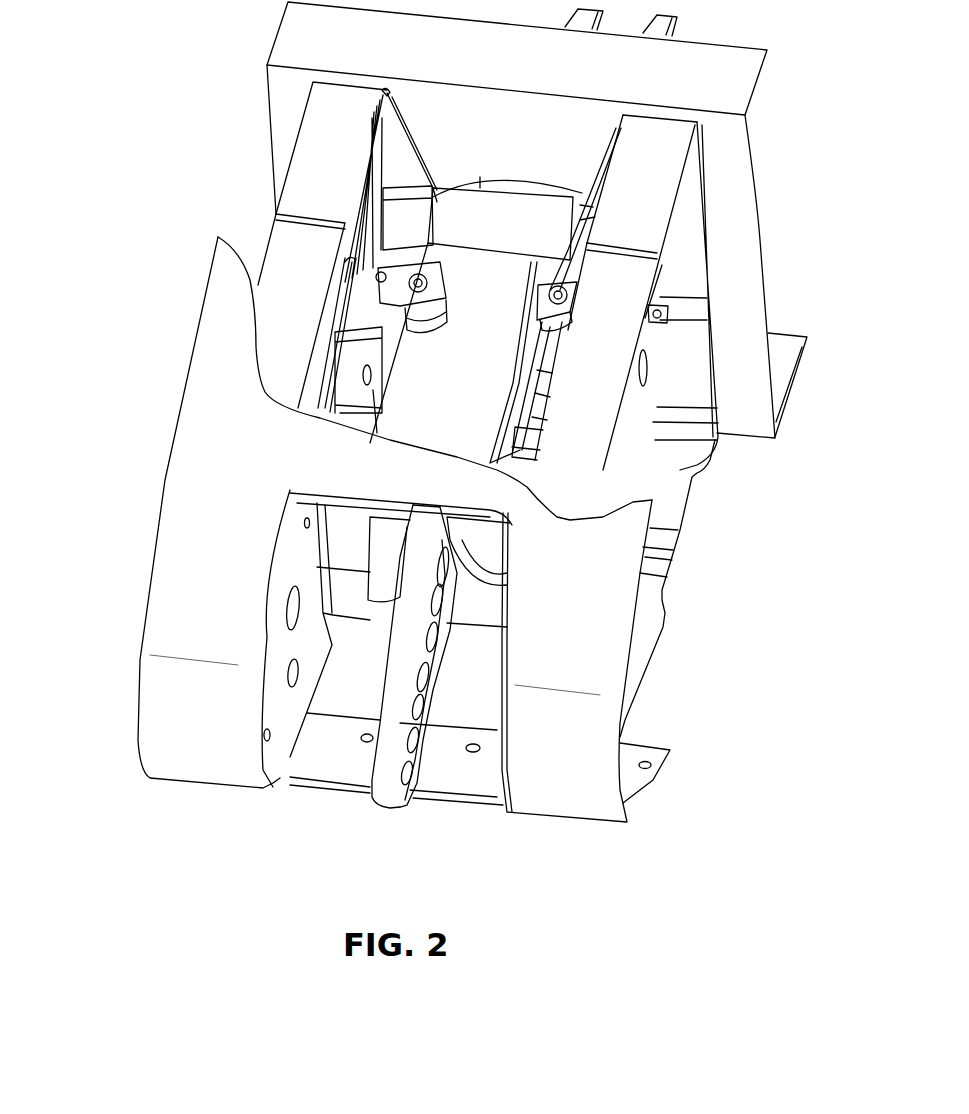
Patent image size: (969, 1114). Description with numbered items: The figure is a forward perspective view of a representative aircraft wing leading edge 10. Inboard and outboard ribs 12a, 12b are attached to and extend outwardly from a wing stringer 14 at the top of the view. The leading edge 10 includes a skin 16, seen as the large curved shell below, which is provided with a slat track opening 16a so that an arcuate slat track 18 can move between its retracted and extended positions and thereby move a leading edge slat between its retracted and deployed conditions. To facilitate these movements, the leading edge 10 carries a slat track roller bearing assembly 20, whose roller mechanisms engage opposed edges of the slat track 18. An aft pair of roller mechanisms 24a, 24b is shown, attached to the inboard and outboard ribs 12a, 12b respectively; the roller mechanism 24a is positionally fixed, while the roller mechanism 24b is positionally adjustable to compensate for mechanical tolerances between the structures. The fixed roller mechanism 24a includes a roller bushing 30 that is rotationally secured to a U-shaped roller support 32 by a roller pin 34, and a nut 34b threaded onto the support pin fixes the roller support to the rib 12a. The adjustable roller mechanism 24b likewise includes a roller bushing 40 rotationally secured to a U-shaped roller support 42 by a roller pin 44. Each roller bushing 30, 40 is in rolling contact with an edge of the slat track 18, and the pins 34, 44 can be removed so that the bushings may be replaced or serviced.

The wing leading edge 10 is at (126, 250).
The wing stringer 14 is at (443, 56).
The inboard rib 12a is at (634, 311).
The outboard rib 12b is at (312, 302).
The skin 16 is at (227, 503).
The slat track opening 16a is at (332, 752).
The slat track 18 is at (487, 431).
The slat track roller bearing assembly 20 is at (407, 198).
The fixed roller mechanism 24a is at (572, 268).
The adjustable roller mechanism 24b is at (355, 240).
The roller bushing 30 is at (535, 328).
The roller support 32 is at (562, 330).
The roller pin 34 is at (548, 290).
The nut 34b is at (655, 305).
The roller bushing 40 is at (418, 322).
The roller support 42 is at (398, 277).
The roller pin 44 is at (418, 280).